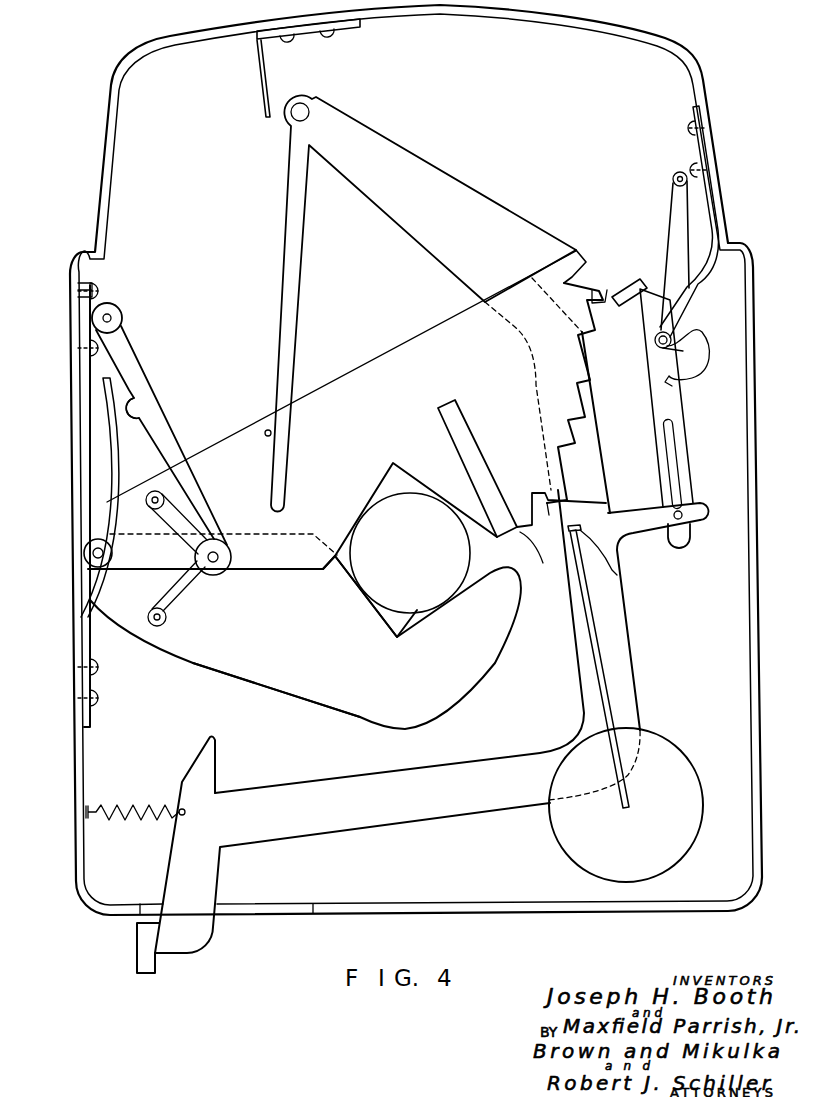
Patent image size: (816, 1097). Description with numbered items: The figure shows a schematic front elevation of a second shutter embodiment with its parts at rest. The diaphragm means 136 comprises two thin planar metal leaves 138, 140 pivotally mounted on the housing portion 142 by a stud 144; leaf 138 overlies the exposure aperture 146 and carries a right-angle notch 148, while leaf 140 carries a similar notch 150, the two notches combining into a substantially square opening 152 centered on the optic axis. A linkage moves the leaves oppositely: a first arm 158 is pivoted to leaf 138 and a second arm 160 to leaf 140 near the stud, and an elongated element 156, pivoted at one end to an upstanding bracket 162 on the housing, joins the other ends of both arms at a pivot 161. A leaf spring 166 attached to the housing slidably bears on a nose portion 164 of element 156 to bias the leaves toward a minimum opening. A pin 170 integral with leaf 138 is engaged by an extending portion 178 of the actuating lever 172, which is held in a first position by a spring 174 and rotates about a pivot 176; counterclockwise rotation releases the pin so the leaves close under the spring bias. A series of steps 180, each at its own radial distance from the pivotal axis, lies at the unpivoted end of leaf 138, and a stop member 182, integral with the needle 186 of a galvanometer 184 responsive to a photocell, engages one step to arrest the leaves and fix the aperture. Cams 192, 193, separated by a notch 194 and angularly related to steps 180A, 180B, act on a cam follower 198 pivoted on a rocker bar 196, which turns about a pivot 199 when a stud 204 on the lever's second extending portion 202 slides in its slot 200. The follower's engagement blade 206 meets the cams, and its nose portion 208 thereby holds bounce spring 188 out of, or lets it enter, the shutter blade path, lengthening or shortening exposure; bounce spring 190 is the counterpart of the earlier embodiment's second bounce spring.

The diaphragm means 136 is at (195, 676).
The leaf 138 is at (242, 432).
The leaf 140 is at (292, 682).
The housing portion 142 is at (86, 765).
The stud 144 is at (88, 553).
The exposure aperture 146 is at (455, 562).
The notch 148 is at (390, 466).
The notch 150 is at (408, 622).
The square opening 152 is at (336, 560).
The elongated element 156 is at (158, 402).
The first arm 158 is at (166, 522).
The second arm 160 is at (183, 592).
The pivot 161 is at (218, 561).
The bracket 162 is at (97, 300).
The nose portion 164 is at (128, 426).
The leaf spring 166 is at (110, 440).
The pin 170 is at (266, 430).
The actuating lever 172 is at (304, 834).
The spring 174 is at (140, 800).
The pivot 176 is at (309, 112).
The extending portion 178 is at (290, 232).
The steps 180 is at (588, 382).
The step 180A is at (568, 557).
The step 180B is at (580, 501).
The stop member 182 is at (620, 560).
The galvanometer 184 is at (570, 843).
The needle 186 is at (608, 662).
The bounce spring 188 is at (696, 278).
The bounce spring 190 is at (267, 80).
The cam 192 is at (578, 236).
The cam 193 is at (598, 305).
The notch 194 is at (548, 300).
The rocker bar 196 is at (689, 402).
The cam follower 198 is at (655, 276).
The pivot 199 is at (673, 180).
The slot 200 is at (680, 455).
The second extending portion 202 is at (648, 522).
The pivot 204 is at (683, 518).
The engagement blade 206 is at (626, 292).
The nose portion 208 is at (688, 302).